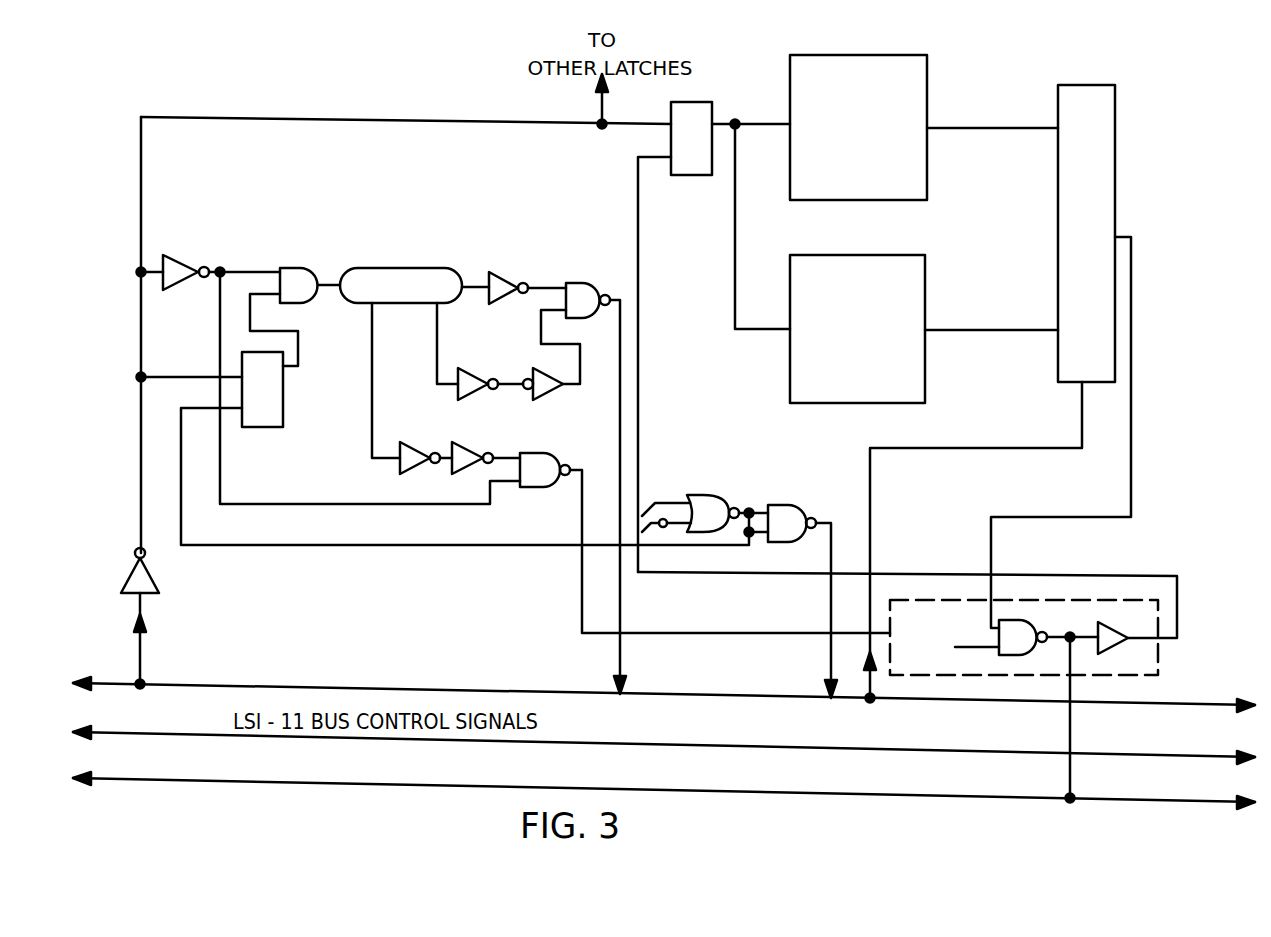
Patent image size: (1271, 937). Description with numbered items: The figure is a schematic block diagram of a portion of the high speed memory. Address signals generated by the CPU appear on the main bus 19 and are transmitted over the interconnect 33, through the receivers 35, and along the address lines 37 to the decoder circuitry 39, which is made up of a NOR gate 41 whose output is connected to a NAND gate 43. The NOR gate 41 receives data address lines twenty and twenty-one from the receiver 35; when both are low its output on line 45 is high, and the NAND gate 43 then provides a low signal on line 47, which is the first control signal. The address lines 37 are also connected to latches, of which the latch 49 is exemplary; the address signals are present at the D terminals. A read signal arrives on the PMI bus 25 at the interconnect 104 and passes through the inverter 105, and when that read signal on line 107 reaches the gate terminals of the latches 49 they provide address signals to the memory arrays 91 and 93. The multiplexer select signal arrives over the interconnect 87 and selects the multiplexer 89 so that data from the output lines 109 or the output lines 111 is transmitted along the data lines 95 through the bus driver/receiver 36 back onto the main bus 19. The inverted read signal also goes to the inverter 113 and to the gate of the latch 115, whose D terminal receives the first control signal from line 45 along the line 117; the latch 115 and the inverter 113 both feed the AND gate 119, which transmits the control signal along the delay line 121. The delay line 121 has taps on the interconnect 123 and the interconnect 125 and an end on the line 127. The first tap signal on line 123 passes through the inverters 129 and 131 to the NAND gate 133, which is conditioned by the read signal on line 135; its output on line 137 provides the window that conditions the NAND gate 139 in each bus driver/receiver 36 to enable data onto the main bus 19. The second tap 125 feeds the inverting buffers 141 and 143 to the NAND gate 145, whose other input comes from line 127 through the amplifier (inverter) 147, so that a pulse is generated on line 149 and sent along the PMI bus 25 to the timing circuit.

The read signal line 107 is at (376, 117).
The inverter 113 is at (178, 270).
The AND gate 119 is at (294, 270).
The delay line 121 is at (388, 270).
The delay line end line 127 is at (478, 284).
The amplifier (inverter) 147 is at (505, 288).
The NAND gate 145 is at (585, 298).
The second tap interconnect 125 is at (437, 350).
The inverting buffer 141 is at (470, 378).
The inverting buffer 143 is at (548, 378).
The first tap interconnect 123 is at (372, 350).
The latch 115 is at (283, 408).
The inverter 129 is at (400, 452).
The inverter 131 is at (470, 458).
The NAND gate 133 is at (548, 470).
The read signal line 135 is at (448, 504).
The first control signal line 117 is at (518, 545).
The delay window signal line 137 is at (582, 598).
The pulse output line 149 is at (638, 600).
The inverter 105 is at (158, 578).
The interconnect 104 is at (142, 645).
The latch 49 is at (710, 172).
The memory array 91 is at (925, 78).
The memory array 93 is at (922, 280).
The output lines 109 is at (992, 128).
The output lines 111 is at (998, 330).
The multiplexer 89 is at (1100, 132).
The data lines 95 is at (1131, 410).
The interconnect 87 is at (870, 535).
The NOR gate 41 is at (707, 500).
The line 45 is at (745, 512).
The decoder circuitry 39 is at (747, 533).
The NAND gate 43 is at (795, 515).
The line 47 is at (832, 545).
The address lines 37 is at (1160, 576).
The bus driver/receiver circuit 36 is at (1155, 662).
The NAND gate 139 is at (1022, 635).
The receiver 35 is at (1112, 637).
The interconnect 33 is at (1070, 735).
The PMI bus 25 is at (735, 692).
The main bus 19 is at (1152, 797).